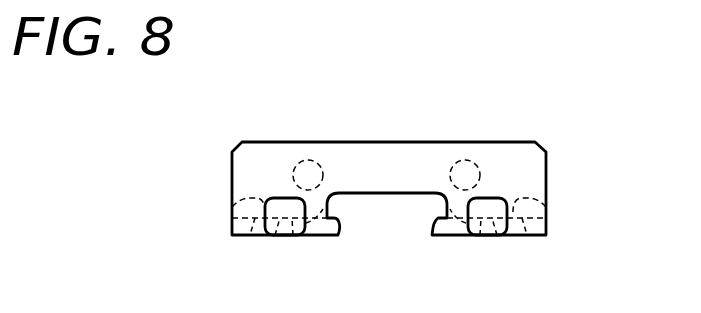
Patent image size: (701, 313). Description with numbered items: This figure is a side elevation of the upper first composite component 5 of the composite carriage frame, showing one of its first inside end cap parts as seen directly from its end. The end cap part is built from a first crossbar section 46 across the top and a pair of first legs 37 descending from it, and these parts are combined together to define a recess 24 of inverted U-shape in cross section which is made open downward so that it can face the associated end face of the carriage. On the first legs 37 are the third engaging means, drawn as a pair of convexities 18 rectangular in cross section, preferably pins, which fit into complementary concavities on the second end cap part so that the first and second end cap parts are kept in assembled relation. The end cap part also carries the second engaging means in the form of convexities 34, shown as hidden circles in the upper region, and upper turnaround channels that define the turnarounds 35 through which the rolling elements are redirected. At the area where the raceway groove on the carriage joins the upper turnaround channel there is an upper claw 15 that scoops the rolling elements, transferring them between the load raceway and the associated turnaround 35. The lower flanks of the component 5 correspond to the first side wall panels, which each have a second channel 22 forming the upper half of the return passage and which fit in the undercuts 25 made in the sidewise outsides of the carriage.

The first composite component 5 is at (518, 139).
The upper claw 15 is at (332, 235).
The convexity 18 is at (283, 208).
The second channel 22 is at (270, 235).
The recess 24 is at (388, 195).
The undercuts 25 is at (232, 207).
The convexities 34 is at (310, 166).
The turnarounds 35 is at (293, 235).
The first legs 37 is at (243, 215).
The first crossbar section 46 is at (398, 172).